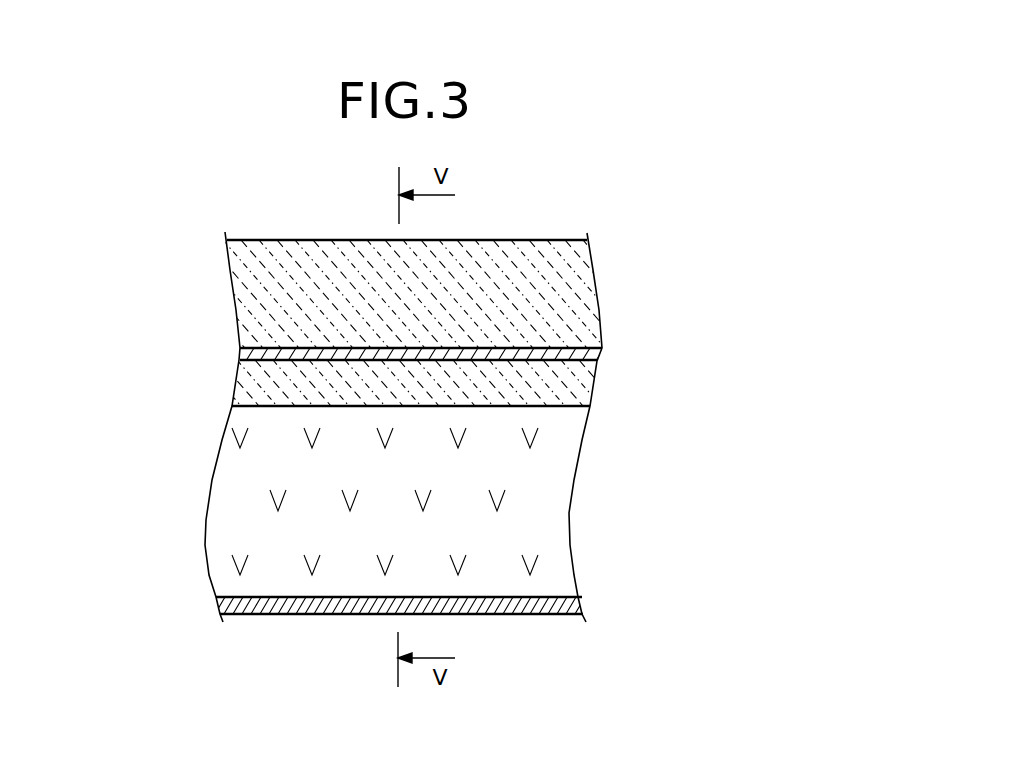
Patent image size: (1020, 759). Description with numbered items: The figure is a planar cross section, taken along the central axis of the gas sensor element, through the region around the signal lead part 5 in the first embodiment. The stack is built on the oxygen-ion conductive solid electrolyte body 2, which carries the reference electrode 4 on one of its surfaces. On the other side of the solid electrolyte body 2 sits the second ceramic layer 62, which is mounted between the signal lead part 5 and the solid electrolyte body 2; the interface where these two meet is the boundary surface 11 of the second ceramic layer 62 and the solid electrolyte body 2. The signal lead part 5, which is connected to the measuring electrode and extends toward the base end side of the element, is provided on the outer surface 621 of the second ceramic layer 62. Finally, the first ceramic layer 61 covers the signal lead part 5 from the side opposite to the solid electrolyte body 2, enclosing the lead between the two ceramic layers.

The first ceramic layer 61 is at (499, 274).
The outer surface of the second ceramic layer 621 is at (333, 349).
The signal lead part 5 is at (545, 349).
The second ceramic layer 62 is at (585, 388).
The boundary surface 11 is at (297, 406).
The oxygen-ion conductive solid electrolyte body 2 is at (527, 472).
The reference electrode 4 is at (345, 607).